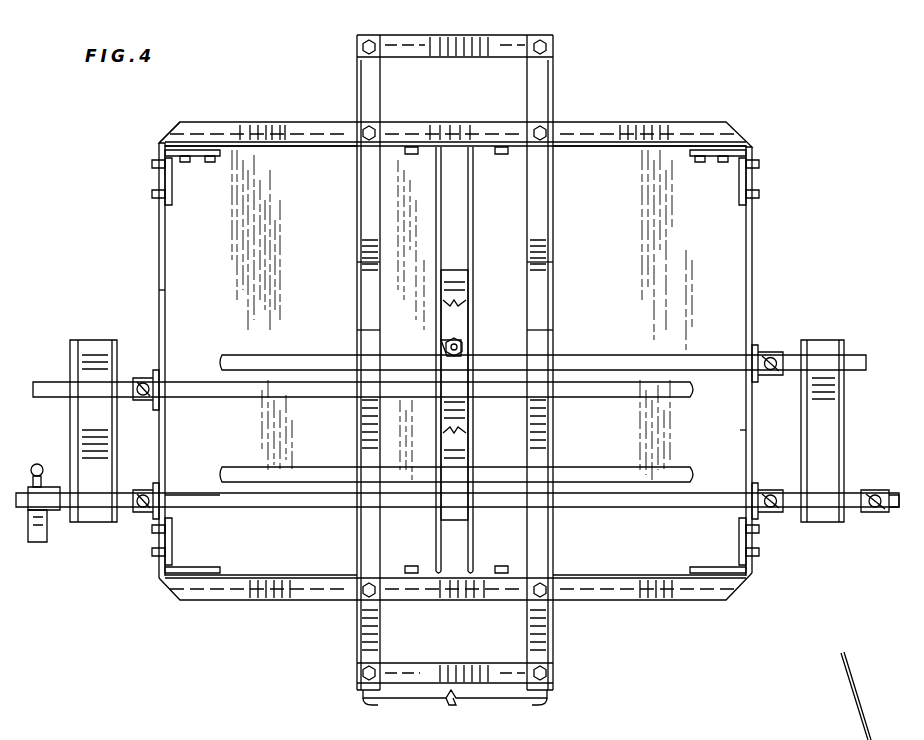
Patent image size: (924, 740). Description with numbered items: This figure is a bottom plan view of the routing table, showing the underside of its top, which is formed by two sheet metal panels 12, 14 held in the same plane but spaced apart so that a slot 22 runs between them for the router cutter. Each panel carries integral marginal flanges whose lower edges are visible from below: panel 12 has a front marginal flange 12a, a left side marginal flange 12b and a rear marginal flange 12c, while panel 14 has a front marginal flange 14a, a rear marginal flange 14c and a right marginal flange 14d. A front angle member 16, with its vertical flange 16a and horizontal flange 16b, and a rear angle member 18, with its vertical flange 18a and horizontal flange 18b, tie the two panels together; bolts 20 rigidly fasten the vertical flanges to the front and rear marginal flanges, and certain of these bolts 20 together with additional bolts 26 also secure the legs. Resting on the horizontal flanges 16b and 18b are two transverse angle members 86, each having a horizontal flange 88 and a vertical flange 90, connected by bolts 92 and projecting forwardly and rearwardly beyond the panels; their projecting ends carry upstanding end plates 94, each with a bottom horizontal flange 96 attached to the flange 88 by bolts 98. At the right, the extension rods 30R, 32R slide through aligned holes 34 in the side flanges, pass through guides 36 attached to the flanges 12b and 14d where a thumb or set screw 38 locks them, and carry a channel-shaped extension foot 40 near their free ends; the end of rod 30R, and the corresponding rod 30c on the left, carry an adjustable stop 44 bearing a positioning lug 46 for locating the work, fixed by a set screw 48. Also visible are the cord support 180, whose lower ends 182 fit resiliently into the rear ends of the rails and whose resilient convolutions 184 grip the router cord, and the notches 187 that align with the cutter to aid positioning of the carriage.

The sheet metal panel 12 is at (190, 252).
The front marginal flange 12a is at (305, 572).
The left side marginal flange 12b is at (162, 293).
The rear marginal flange 12c is at (283, 148).
The sheet metal panel 14 is at (722, 290).
The front marginal flange 14a is at (620, 572).
The rear marginal flange 14c is at (668, 148).
The right marginal flange 14d is at (746, 440).
The front angle member 16 is at (318, 120).
The vertical flange 16a is at (668, 134).
The horizontal flange 16b is at (210, 130).
The rear angle member 18 is at (330, 605).
The vertical flange 18a is at (220, 590).
The horizontal flange 18b is at (632, 600).
The bolts 20 is at (412, 156).
The slot 22 is at (448, 234).
The additional bolts 26 is at (152, 194).
The lower shaft portion 30c is at (218, 507).
The extension rod 30R is at (605, 466).
The extension rod 32R is at (622, 356).
The aligned holes 34 is at (435, 350).
The guides 36 is at (440, 468).
The thumb or set screw 38 is at (145, 376).
The channel-shaped extension foot 40 is at (70, 360).
The adjustable stop 44 is at (58, 512).
The positioning lug 46 is at (37, 542).
The set screw 48 is at (37, 464).
The transverse angle members 86 is at (355, 265).
The horizontal flange 88 is at (372, 210).
The vertical flange 90 is at (357, 318).
The bolts 92 is at (376, 130).
The end plates 94 is at (500, 38).
The horizontal flange 96 is at (482, 60).
The bolts 98 is at (360, 46).
The cord support 180 is at (440, 702).
The lower ends 182 is at (370, 702).
The resilient convolutions 184 is at (458, 706).
The notches 187 is at (458, 300).